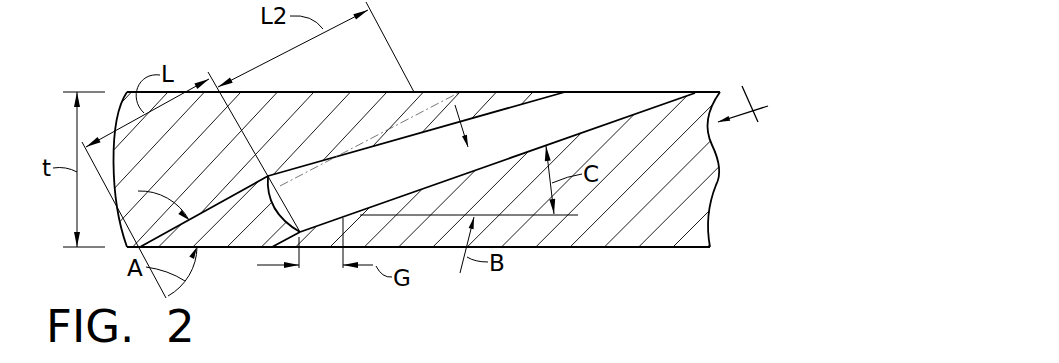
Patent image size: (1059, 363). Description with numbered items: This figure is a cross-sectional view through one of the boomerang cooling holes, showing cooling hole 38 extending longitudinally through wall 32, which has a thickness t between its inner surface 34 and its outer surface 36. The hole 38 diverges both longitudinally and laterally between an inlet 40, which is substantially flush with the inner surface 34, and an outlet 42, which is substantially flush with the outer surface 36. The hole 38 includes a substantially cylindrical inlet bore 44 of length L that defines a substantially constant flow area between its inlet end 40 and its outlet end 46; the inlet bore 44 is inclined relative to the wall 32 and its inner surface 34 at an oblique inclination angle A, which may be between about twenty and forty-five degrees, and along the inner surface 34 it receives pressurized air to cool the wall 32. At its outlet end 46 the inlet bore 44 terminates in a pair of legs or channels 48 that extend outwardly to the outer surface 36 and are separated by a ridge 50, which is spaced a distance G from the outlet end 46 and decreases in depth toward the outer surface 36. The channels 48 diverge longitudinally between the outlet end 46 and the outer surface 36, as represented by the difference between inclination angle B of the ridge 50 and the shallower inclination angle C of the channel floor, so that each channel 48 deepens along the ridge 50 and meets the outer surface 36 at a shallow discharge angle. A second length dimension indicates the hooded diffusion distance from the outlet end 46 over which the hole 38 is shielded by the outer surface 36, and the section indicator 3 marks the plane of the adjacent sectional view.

The wall 32 is at (721, 170).
The inner surface 34 is at (540, 247).
The outer surface 36 is at (350, 92).
The cooling hole 38 is at (631, 39).
The inlet 40 is at (227, 249).
The outlet 42 is at (538, 92).
The inlet bore 44 is at (222, 217).
The outlet end 46 is at (265, 190).
The channels 48 is at (590, 105).
The ridge 50 is at (487, 128).
The section line indicator 3 is at (745, 112).